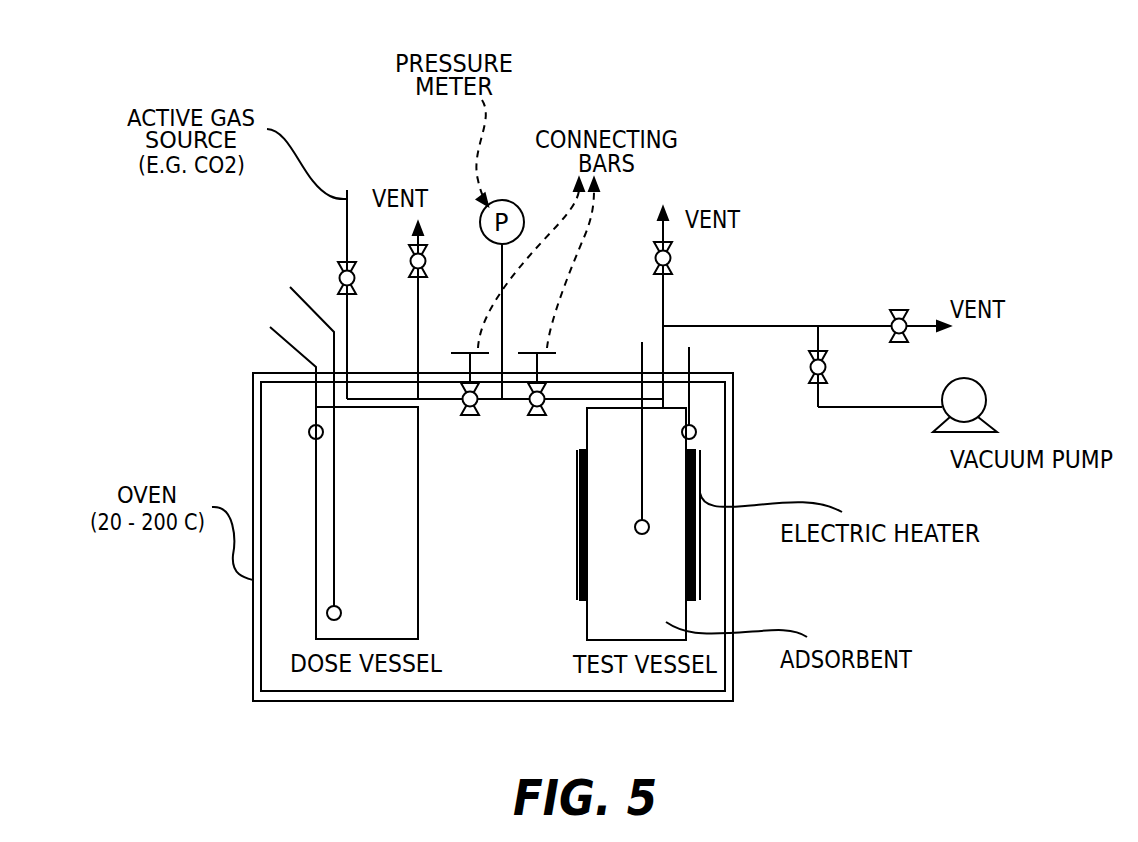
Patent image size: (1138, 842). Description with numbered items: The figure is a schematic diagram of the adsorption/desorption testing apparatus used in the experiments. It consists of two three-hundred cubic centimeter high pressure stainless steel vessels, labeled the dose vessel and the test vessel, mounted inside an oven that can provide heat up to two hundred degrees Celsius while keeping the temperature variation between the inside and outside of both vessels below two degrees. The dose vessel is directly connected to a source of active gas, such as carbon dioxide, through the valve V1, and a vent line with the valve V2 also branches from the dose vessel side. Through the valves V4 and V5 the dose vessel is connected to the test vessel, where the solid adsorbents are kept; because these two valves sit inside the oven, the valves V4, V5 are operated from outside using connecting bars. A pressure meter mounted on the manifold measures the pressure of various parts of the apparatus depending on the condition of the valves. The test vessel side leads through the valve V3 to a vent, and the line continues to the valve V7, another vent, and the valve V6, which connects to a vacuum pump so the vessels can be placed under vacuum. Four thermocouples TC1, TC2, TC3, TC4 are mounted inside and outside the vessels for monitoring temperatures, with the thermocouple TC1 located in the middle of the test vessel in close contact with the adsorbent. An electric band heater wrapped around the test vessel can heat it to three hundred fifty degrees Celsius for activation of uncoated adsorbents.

The valve V1 is at (328, 294).
The valve V2 is at (405, 310).
The valve V3 is at (680, 307).
The valve V4 is at (470, 404).
The valve V5 is at (537, 404).
The valve V6 is at (837, 366).
The valve V7 is at (892, 305).
The thermocouple TC1 is at (620, 430).
The thermocouple TC2 is at (708, 390).
The thermocouple TC3 is at (276, 378).
The thermocouple TC4 is at (292, 442).